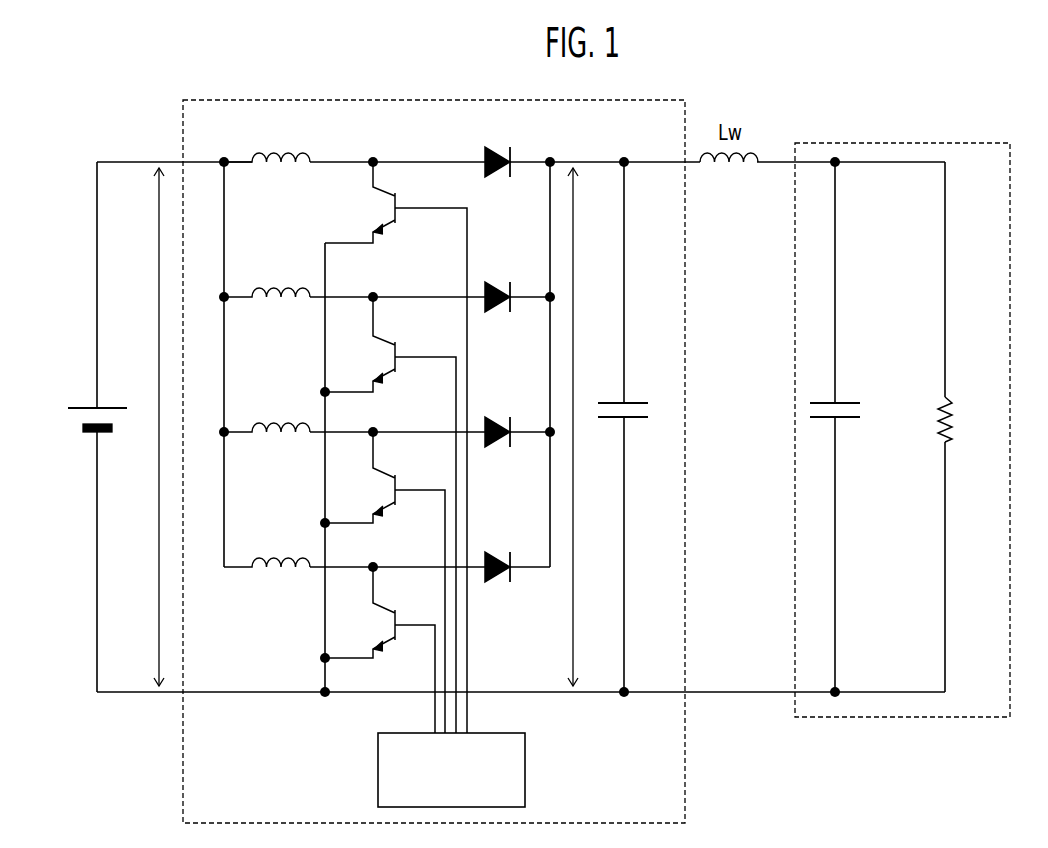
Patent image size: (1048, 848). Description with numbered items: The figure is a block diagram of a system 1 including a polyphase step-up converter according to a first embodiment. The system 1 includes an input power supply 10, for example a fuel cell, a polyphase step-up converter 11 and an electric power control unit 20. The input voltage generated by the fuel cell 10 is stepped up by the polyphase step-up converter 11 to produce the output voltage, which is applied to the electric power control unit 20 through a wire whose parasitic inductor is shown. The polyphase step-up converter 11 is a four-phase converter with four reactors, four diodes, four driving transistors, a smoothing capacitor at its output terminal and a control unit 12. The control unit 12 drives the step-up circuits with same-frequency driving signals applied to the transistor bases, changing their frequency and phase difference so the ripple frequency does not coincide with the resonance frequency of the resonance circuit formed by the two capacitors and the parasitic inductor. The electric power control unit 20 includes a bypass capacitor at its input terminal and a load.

The system 1 is at (136, 105).
The input power supply 10 is at (88, 408).
The polyphase step-up converter 11 is at (357, 100).
The control unit 12 is at (527, 770).
The electric power control unit 20 is at (890, 143).